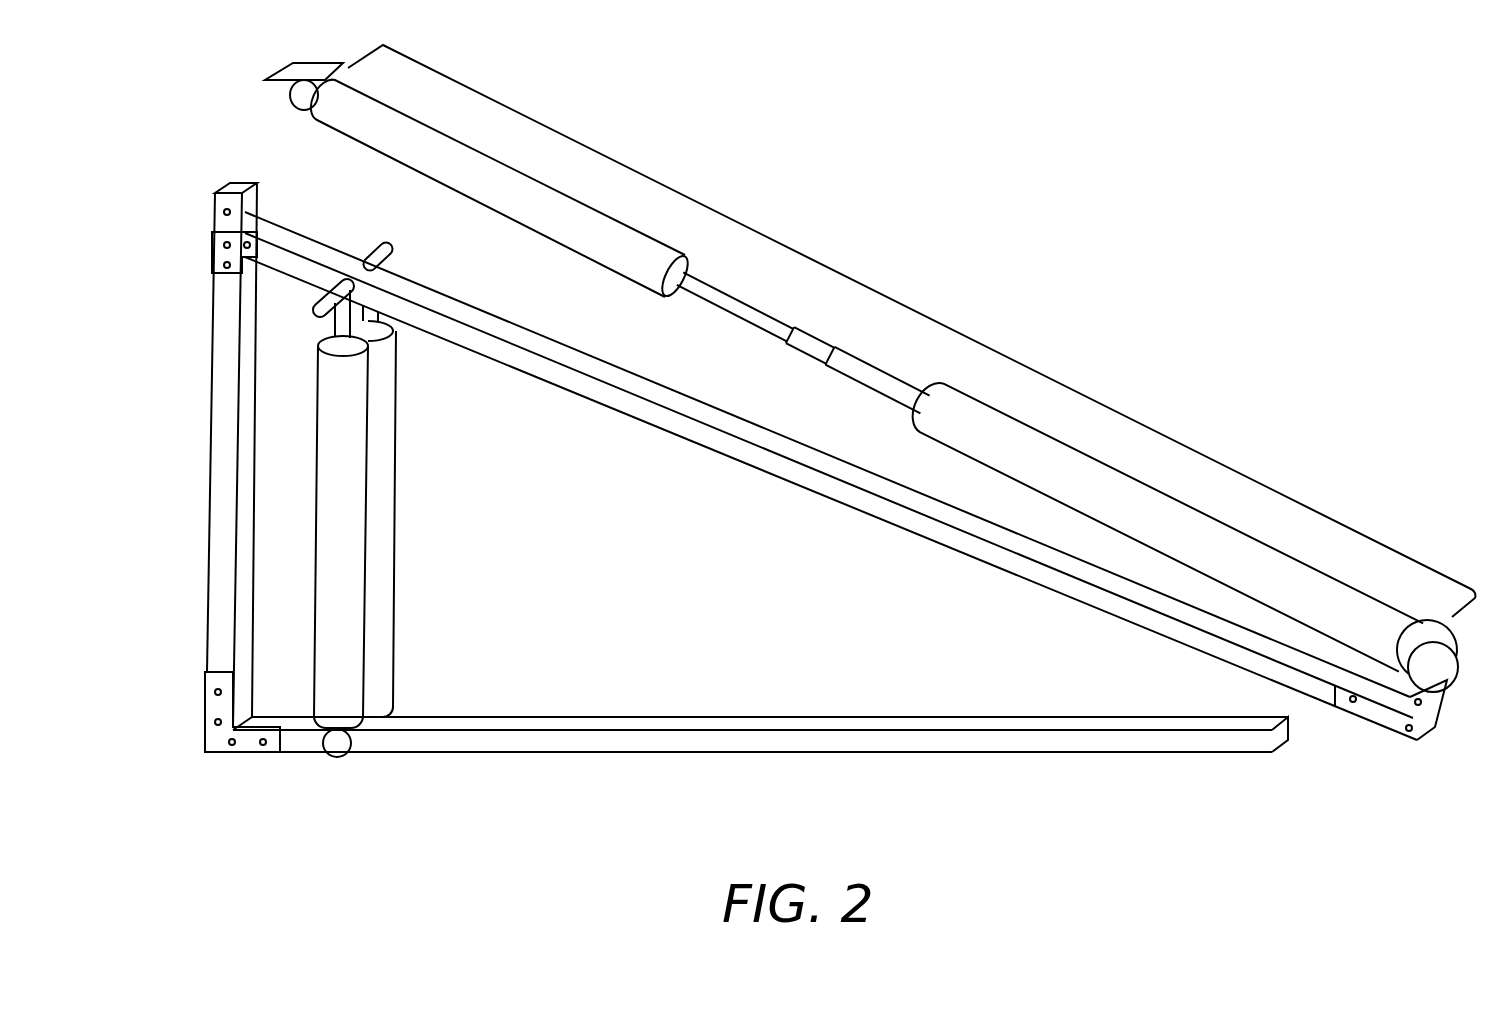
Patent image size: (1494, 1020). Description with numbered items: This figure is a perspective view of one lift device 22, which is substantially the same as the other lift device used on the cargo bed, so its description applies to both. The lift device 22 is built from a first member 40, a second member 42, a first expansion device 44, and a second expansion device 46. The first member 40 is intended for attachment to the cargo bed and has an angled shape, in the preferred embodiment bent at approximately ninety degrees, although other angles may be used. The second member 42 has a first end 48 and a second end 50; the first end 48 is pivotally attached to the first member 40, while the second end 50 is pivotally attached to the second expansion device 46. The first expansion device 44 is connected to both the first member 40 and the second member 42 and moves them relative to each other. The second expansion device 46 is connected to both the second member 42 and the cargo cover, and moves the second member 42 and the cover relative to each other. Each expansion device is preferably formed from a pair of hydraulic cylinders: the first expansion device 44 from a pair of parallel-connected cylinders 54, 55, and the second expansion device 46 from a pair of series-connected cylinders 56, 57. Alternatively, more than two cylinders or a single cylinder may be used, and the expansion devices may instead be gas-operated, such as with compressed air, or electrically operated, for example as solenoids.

The lift device 22 is at (1108, 216).
The first member 40 is at (207, 625).
The second member 42 is at (702, 447).
The first expansion device 44 is at (440, 500).
The second expansion device 46 is at (917, 308).
The first end 48 is at (277, 223).
The second end 50 is at (1418, 742).
The cylinder 54 is at (395, 612).
The cylinder 55 is at (312, 597).
The cylinder 56 is at (555, 241).
The cylinder 57 is at (920, 432).